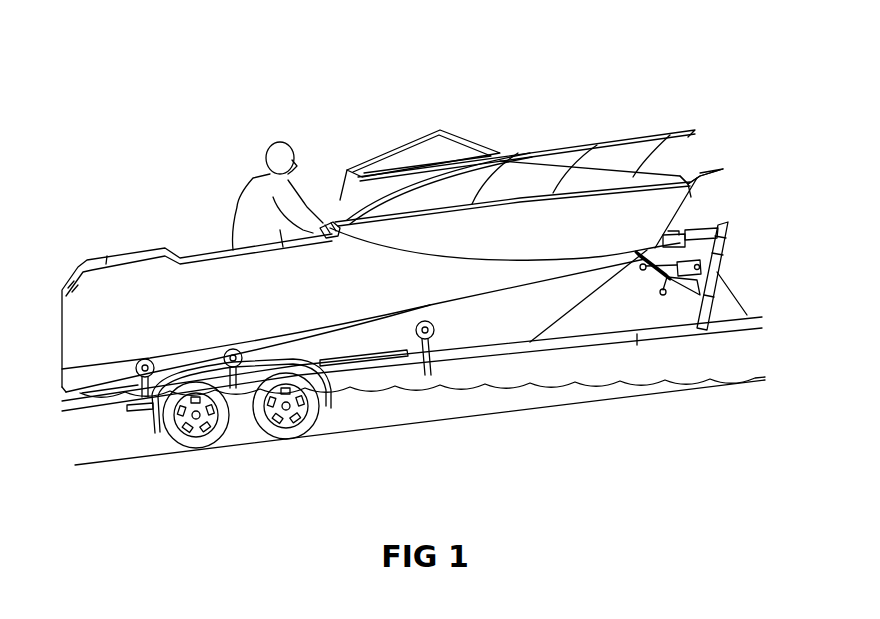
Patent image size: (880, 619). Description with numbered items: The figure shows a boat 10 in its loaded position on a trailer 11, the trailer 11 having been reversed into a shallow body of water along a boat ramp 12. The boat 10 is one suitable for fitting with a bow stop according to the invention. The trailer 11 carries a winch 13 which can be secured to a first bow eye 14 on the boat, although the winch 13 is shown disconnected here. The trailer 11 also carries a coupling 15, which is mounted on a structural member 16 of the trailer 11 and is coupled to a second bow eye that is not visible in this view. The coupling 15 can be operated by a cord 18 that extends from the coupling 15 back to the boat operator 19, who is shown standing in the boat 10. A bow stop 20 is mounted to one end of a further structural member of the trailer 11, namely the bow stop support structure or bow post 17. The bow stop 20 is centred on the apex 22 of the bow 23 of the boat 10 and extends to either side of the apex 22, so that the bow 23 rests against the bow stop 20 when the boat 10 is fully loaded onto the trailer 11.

The boat 10 is at (528, 123).
The trailer 11 is at (393, 370).
The boat ramp 12 is at (427, 419).
The winch 13 is at (699, 253).
The first bow eye 14 is at (660, 240).
The coupling 15 is at (674, 226).
The structural member 16 is at (705, 224).
The bow post 17 is at (662, 262).
The cord 18 is at (482, 258).
The boat operator 19 is at (240, 212).
The bow stop 20 is at (645, 255).
The apex 22 is at (692, 198).
The bow 23 is at (525, 314).